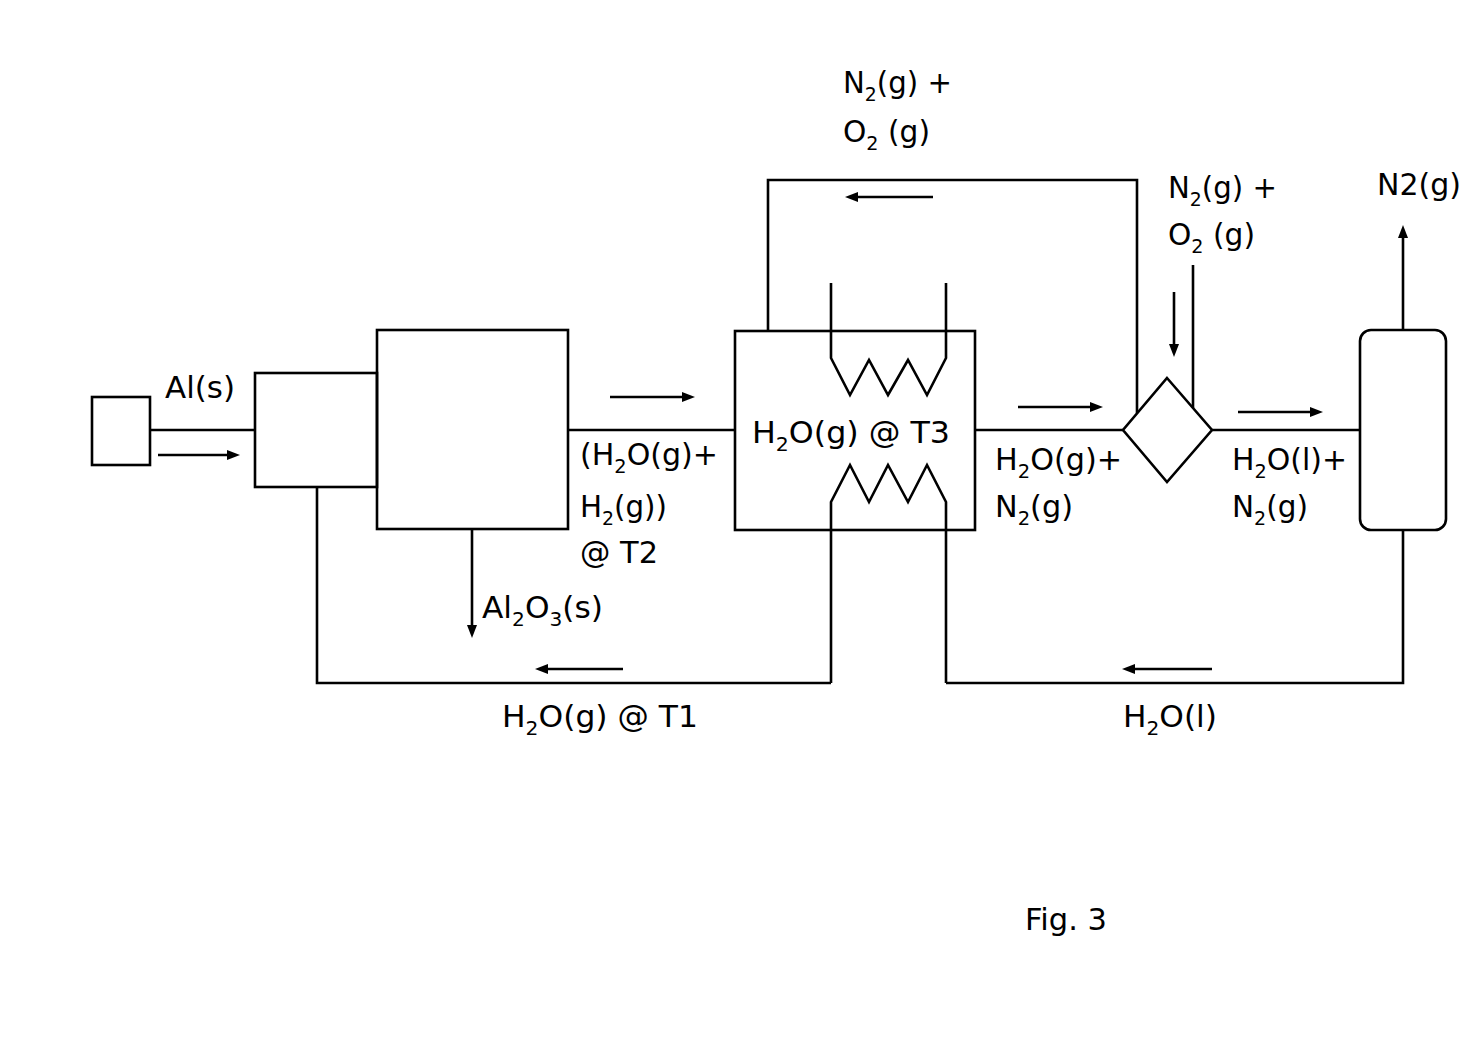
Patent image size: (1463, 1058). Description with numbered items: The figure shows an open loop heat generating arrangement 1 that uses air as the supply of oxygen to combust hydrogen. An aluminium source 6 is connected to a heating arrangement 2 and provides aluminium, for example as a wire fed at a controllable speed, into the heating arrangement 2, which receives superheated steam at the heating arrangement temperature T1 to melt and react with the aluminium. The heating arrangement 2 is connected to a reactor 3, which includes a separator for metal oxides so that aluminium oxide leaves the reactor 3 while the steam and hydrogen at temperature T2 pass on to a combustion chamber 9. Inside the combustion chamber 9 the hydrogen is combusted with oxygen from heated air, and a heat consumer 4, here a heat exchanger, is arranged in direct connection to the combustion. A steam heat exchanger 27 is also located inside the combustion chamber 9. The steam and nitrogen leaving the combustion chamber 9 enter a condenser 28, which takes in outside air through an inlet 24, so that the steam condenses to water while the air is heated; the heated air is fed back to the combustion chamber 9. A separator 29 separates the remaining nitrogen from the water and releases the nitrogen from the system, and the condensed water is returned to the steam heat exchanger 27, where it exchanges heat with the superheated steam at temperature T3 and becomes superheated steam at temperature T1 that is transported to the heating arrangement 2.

The heat generating arrangement 1 is at (346, 173).
The heating arrangement 2 is at (360, 373).
The reactor 3 is at (532, 330).
The heat consumer 4 is at (947, 307).
The aluminium source 6 is at (122, 397).
The combustion chamber 9 is at (855, 430).
The inlet 24 is at (1195, 342).
The steam heat exchanger 27 is at (910, 498).
The condenser 28 is at (1152, 468).
The separator 29 is at (1403, 430).